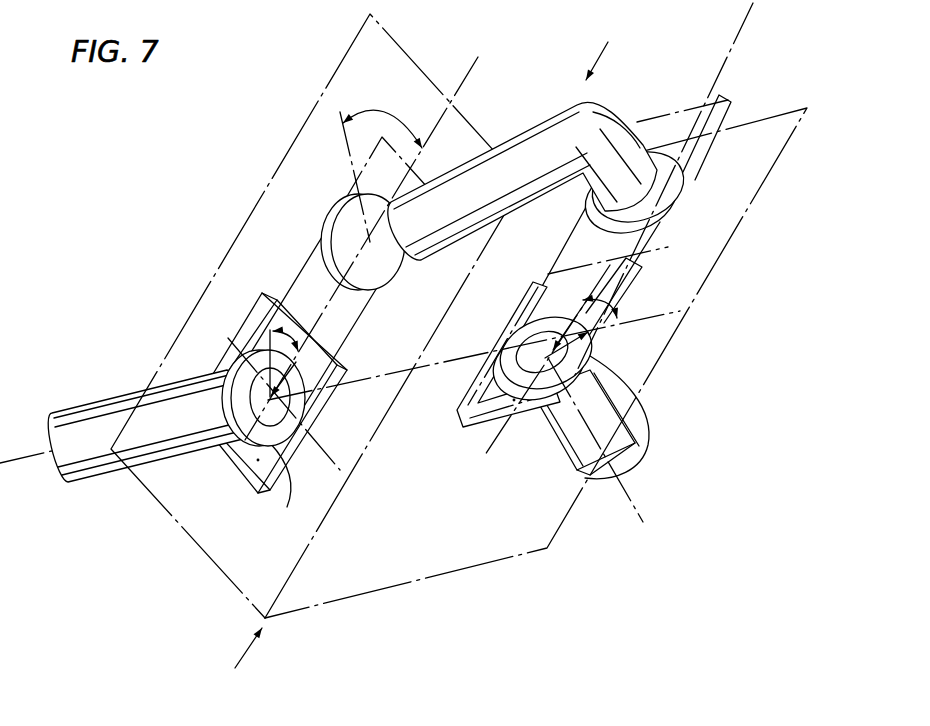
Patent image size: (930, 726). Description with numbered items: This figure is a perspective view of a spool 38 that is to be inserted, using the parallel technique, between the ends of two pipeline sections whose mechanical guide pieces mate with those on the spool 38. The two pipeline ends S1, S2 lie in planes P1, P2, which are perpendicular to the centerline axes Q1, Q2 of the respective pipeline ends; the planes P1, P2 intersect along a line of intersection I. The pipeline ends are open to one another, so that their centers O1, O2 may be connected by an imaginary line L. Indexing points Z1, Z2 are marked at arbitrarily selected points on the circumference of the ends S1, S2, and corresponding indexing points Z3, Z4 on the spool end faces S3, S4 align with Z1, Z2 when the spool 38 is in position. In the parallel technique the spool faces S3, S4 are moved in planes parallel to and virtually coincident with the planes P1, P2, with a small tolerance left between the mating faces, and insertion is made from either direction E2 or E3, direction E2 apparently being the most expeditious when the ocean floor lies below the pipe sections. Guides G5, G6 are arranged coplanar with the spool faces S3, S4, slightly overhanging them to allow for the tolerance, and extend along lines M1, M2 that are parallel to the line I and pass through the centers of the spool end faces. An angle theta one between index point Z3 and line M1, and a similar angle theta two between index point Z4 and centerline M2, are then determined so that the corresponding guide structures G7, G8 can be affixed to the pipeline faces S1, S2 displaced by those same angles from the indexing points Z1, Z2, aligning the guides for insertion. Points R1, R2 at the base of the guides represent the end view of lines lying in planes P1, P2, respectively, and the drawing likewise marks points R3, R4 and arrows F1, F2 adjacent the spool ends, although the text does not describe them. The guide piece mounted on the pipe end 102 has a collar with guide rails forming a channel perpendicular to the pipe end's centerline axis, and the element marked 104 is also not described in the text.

The spool 38 is at (543, 138).
The pipe end 102 is at (247, 362).
The second bracket member 104 is at (569, 380).
The plane P1 is at (317, 316).
The plane P2 is at (536, 363).
The line of intersection I is at (331, 512).
The imaginary line L is at (396, 377).
The line M1 is at (376, 237).
The line M2 is at (678, 187).
The centerline axis Q1 is at (34, 457).
The centerline axis Q2 is at (632, 497).
The direction E2 is at (611, 46).
The direction E3 is at (241, 663).
The guide G5 is at (405, 163).
The guide G6 is at (729, 100).
The guide structure G7 is at (270, 388).
The guide structure G8 is at (638, 280).
The indexing point Z1 is at (211, 327).
The indexing point Z2 is at (605, 362).
The indexing point Z3 is at (320, 195).
The indexing point Z4 is at (659, 192).
The line at base of guide R1 is at (240, 358).
The line at base of guide R2 is at (595, 358).
The third ring R3 is at (323, 226).
The fourth ring R4 is at (668, 192).
The pipeline end S1 is at (288, 478).
The pipeline end S2 is at (628, 414).
The spool face S3 is at (320, 243).
The spool face S4 is at (652, 222).
The center O1 is at (255, 463).
The center O2 is at (513, 401).
The first rotation direction F1 is at (298, 374).
The second rotation direction F2 is at (547, 360).